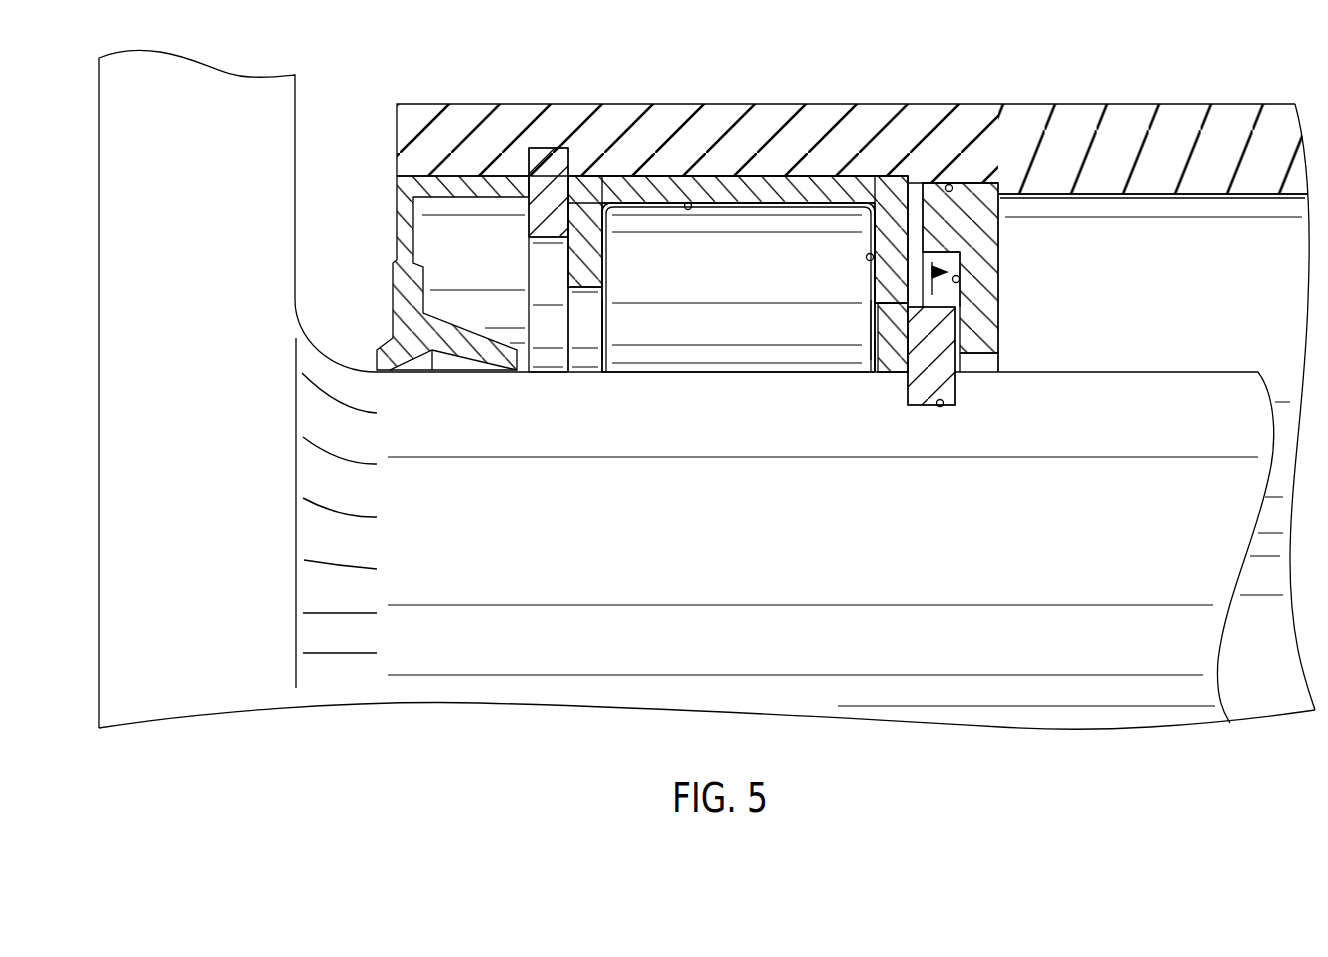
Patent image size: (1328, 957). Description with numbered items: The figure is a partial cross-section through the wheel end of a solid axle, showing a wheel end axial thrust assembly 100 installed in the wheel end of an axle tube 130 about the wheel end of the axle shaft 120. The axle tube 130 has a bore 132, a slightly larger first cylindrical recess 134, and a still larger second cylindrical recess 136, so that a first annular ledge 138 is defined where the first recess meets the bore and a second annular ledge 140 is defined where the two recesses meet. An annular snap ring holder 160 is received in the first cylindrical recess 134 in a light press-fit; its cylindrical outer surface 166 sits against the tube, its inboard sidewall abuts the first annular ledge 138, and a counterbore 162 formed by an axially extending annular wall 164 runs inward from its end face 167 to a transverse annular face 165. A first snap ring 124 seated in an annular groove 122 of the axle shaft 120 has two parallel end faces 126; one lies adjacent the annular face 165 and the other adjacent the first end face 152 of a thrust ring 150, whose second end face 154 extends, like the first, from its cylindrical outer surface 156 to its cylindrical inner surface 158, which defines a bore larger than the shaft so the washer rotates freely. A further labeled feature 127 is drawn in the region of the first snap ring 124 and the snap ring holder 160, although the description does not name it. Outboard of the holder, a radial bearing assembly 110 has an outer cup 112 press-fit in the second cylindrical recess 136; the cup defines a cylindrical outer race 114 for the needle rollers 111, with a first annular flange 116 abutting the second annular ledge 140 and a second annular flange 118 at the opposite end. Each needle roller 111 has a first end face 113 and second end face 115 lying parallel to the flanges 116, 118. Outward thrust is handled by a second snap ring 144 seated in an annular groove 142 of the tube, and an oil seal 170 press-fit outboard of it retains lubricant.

The wheel end axial thrust assembly 100 is at (645, 498).
The radial bearing assembly 110 is at (781, 420).
The needle rollers 111 is at (718, 280).
The outer cup 112 is at (802, 175).
The first end face 113 is at (866, 257).
The cylindrical outer race 114 is at (688, 204).
The second end face 115 is at (601, 330).
The first annular flange 116 is at (858, 222).
The second annular flange 118 is at (621, 206).
The axle shaft 120 is at (762, 542).
The annular groove 122 is at (942, 404).
The first snap ring 124 is at (947, 380).
The end faces 126 is at (879, 331).
The spacer wall 127 is at (945, 295).
The axle tube 130 is at (1188, 104).
The bore 132 is at (1233, 197).
The first cylindrical recess 134 is at (947, 184).
The second cylindrical recess 136 is at (743, 177).
The first annular ledge 138 is at (985, 183).
The second annular ledge 140 is at (900, 177).
The annular groove 142 is at (545, 150).
The second snap ring 144 is at (528, 228).
The thrust ring 150 is at (898, 366).
The first end face 152 is at (910, 352).
The second end face 154 is at (870, 335).
The cylindrical outer surface 156 is at (879, 301).
The cylindrical inner surface 158 is at (879, 373).
The snap ring holder 160 is at (1022, 233).
The counterbore 162 is at (920, 300).
The annular wall 164 is at (975, 253).
The annular face 165 is at (960, 281).
The cylindrical outer surface 166 is at (962, 183).
The end face 167 is at (1013, 217).
The oil seal 170 is at (397, 241).